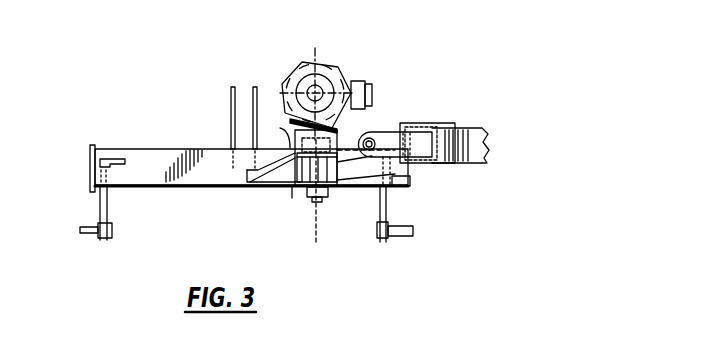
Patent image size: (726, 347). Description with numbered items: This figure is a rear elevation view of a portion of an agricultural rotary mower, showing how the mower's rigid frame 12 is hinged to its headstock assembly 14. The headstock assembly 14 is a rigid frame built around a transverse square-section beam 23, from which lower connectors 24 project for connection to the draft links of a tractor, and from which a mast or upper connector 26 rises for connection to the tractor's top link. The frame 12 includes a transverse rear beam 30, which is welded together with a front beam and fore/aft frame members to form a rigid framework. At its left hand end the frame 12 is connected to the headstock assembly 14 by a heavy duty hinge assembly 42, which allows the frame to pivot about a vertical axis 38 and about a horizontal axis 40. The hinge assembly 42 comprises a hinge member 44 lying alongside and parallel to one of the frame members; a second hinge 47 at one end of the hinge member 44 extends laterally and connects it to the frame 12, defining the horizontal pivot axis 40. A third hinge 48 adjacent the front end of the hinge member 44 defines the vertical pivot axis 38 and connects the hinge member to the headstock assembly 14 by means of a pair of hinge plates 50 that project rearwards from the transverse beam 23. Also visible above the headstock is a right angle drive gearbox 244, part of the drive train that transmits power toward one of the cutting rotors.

The frame 12 is at (466, 127).
The headstock assembly 14 is at (185, 129).
The transverse square-section beam 23 is at (122, 148).
The lower connectors 24 is at (108, 240).
The mast or upper connector 26 is at (232, 107).
The rear beam 30 is at (466, 164).
The vertical axis 38 is at (318, 245).
The horizontal axis 40 is at (371, 143).
The hinge assembly 42 is at (372, 121).
The hinge member 44 is at (276, 186).
The second hinge 47 is at (357, 172).
The third hinge 48 is at (293, 195).
The hinge plates 50 is at (286, 148).
The right angle drive gearbox 244 is at (343, 63).